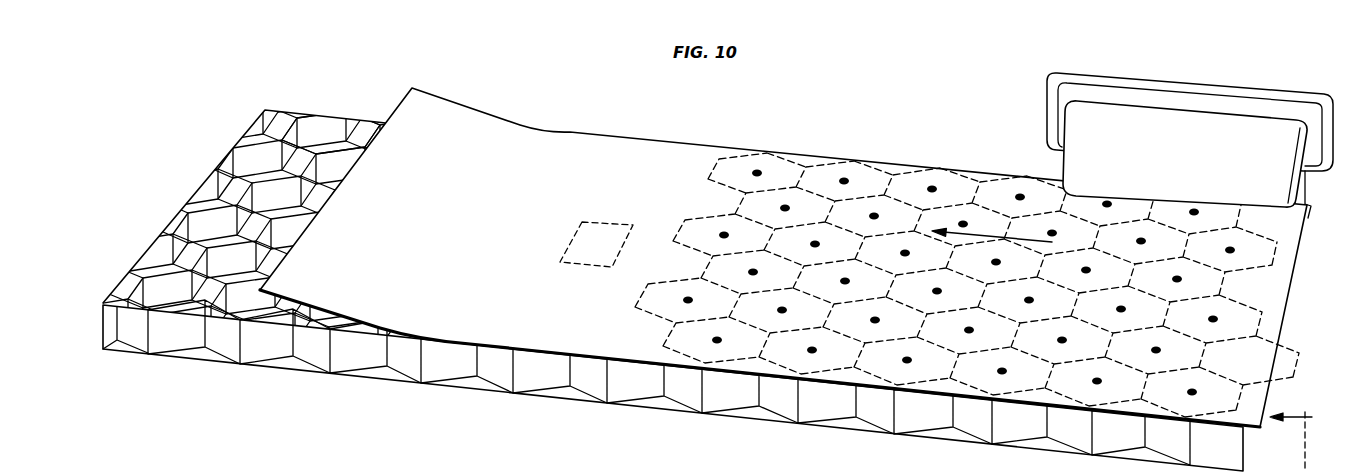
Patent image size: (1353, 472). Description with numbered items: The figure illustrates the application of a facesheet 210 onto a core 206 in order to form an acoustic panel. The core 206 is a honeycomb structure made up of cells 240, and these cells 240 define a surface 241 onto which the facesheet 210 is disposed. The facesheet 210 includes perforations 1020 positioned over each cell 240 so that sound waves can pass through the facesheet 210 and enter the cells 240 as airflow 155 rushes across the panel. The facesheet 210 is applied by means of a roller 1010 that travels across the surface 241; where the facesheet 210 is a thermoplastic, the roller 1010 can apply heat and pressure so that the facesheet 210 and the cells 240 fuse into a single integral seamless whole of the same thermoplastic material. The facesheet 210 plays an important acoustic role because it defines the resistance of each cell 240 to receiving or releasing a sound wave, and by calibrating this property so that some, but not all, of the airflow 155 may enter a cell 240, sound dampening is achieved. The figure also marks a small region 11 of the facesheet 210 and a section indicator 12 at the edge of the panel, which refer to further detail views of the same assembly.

The core 206 is at (228, 384).
The surface 241 is at (332, 137).
The facesheet 210 is at (373, 213).
The cells 240 is at (910, 205).
The perforations 1020 is at (786, 204).
The detail region 11 is at (610, 222).
The airflow 155 is at (997, 236).
The roller 1010 is at (1082, 127).
The section line 12 is at (1302, 442).